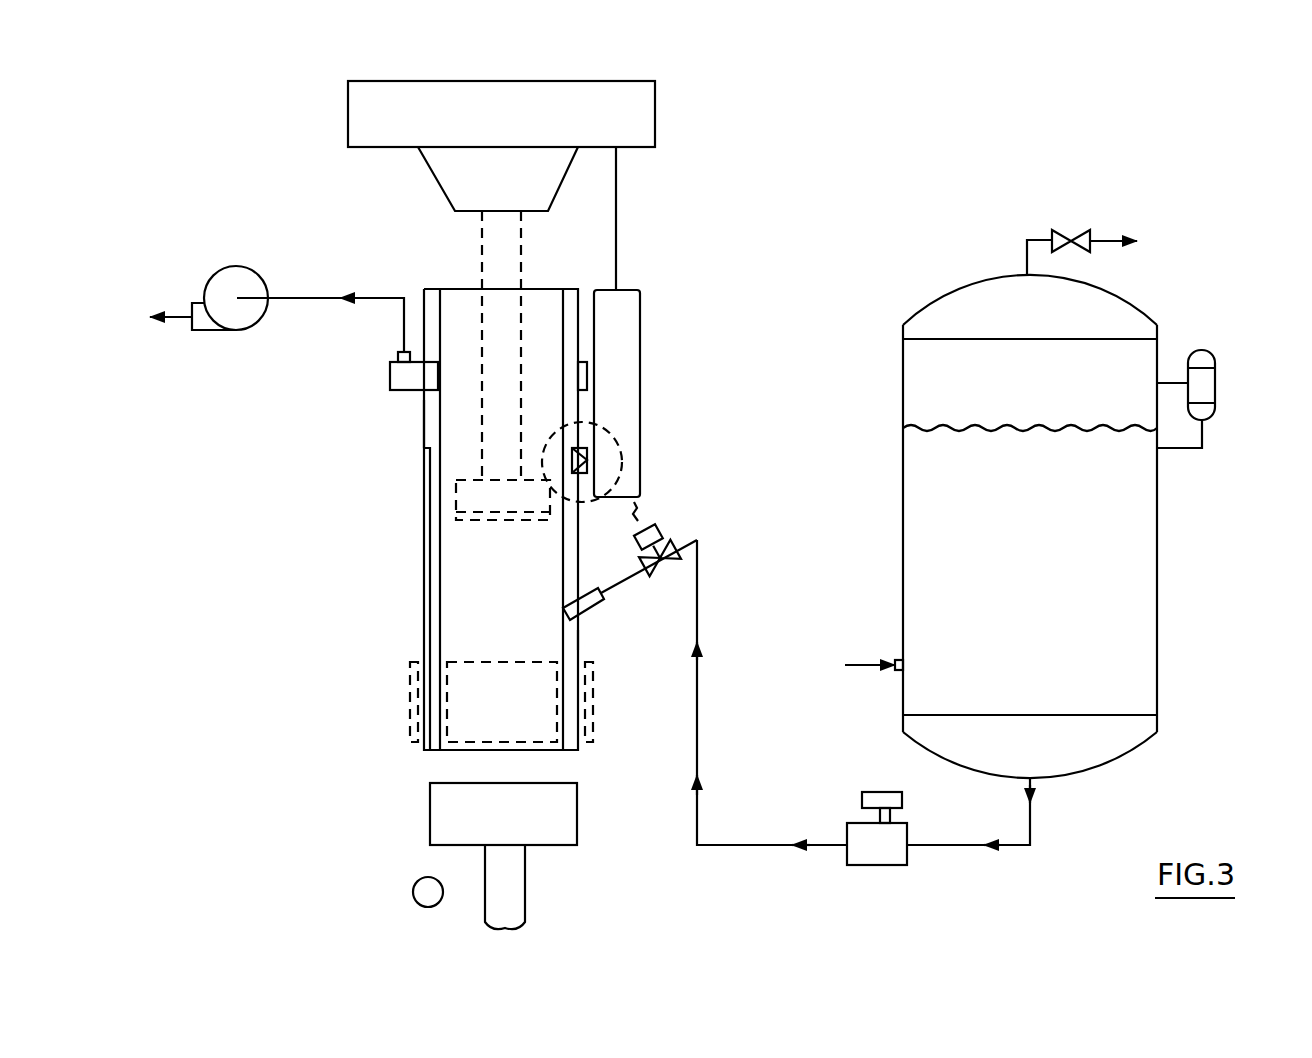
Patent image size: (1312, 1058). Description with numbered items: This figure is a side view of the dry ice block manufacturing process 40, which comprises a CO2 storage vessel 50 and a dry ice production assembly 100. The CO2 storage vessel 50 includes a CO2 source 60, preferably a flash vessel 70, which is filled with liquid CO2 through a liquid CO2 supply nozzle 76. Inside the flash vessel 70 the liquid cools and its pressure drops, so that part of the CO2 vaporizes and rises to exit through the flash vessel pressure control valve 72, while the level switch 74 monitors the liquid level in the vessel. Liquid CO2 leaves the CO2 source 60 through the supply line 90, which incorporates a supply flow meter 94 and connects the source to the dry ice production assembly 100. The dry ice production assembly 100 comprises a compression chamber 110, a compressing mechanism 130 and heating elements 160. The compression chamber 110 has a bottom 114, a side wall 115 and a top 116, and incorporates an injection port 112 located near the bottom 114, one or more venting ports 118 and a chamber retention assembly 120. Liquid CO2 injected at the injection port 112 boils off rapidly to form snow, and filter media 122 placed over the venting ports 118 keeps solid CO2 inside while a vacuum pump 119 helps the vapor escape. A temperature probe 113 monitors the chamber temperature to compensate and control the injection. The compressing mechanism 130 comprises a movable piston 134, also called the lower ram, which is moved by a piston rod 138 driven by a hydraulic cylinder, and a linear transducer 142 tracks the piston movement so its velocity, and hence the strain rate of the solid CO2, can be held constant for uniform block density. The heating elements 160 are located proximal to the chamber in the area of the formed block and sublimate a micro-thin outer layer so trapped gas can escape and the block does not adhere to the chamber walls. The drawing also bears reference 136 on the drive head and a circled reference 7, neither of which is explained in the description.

The dry ice block manufacturing process 40 is at (885, 120).
The CO2 storage vessel 50 is at (1161, 268).
The CO2 source 60 is at (1167, 570).
The flash vessel 70 is at (1011, 581).
The flash vessel pressure control valve 72 is at (1073, 238).
The level switch 74 is at (1204, 348).
The liquid CO2 supply nozzle 76 is at (895, 656).
The supply line 90 is at (715, 862).
The supply flow meter 94 is at (880, 870).
The dry ice production assembly 100 is at (301, 588).
The compression chamber 110 is at (385, 674).
The injection port 112 is at (600, 605).
The temperature probe 113 is at (587, 638).
The bottom 114 is at (560, 750).
The side wall 115 is at (427, 543).
The top 116 is at (440, 288).
The venting port 118 is at (407, 387).
The vacuum pump 119 is at (217, 335).
The chamber retention assembly 120 is at (622, 466).
The filter media 122 is at (578, 382).
The compressing mechanism 130 is at (532, 268).
The piston 134 is at (478, 522).
The drive head 136 is at (632, 95).
The piston rod 138 is at (490, 245).
The linear transducer 142 is at (647, 326).
The heating element 160 is at (593, 732).
The section reference 7 is at (462, 848).